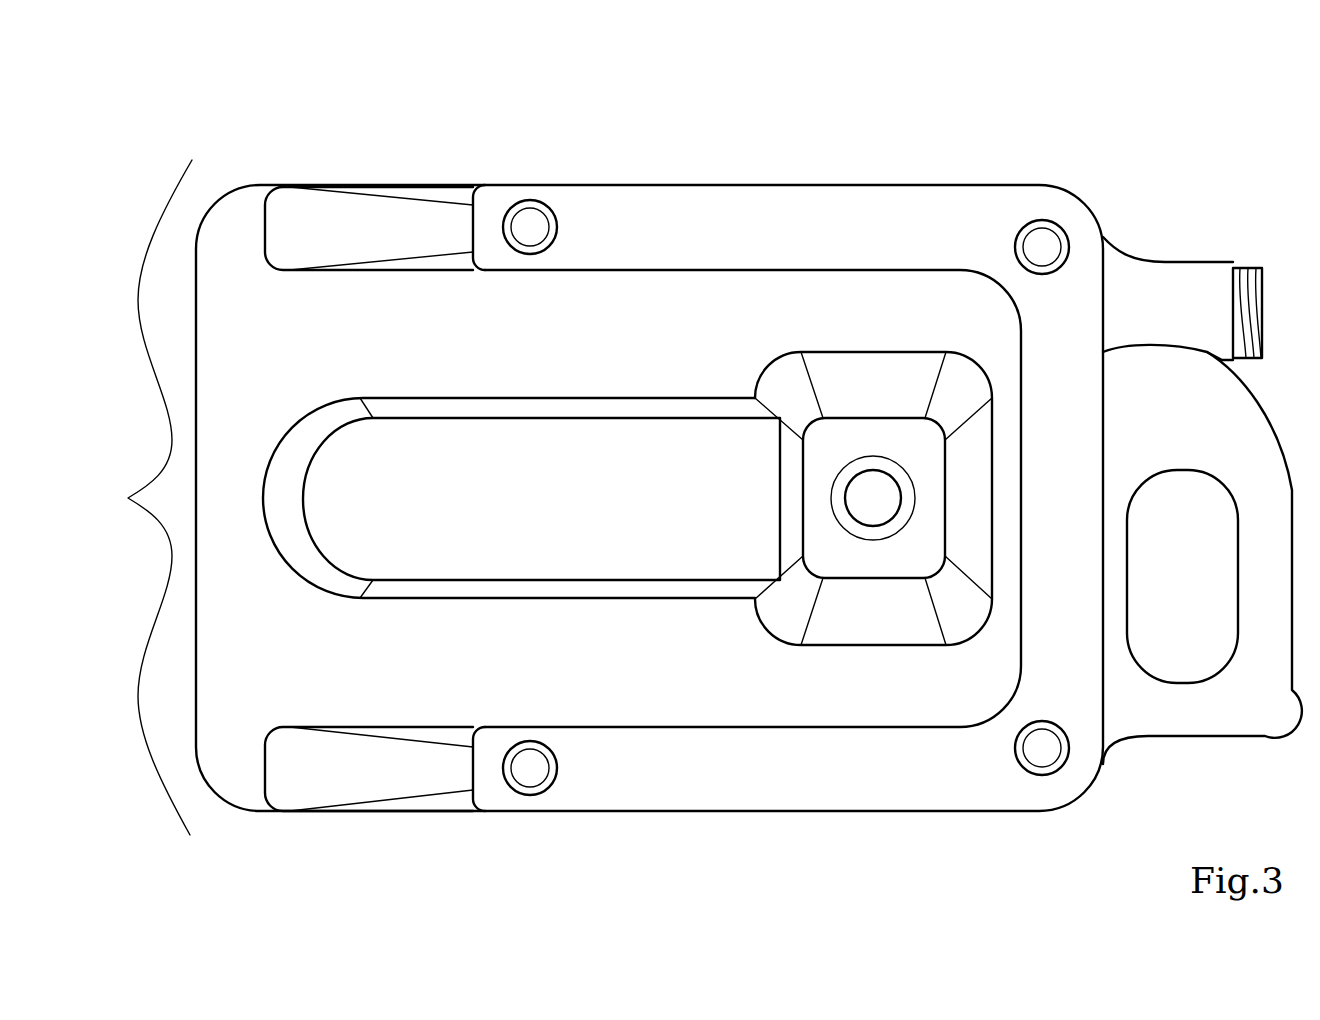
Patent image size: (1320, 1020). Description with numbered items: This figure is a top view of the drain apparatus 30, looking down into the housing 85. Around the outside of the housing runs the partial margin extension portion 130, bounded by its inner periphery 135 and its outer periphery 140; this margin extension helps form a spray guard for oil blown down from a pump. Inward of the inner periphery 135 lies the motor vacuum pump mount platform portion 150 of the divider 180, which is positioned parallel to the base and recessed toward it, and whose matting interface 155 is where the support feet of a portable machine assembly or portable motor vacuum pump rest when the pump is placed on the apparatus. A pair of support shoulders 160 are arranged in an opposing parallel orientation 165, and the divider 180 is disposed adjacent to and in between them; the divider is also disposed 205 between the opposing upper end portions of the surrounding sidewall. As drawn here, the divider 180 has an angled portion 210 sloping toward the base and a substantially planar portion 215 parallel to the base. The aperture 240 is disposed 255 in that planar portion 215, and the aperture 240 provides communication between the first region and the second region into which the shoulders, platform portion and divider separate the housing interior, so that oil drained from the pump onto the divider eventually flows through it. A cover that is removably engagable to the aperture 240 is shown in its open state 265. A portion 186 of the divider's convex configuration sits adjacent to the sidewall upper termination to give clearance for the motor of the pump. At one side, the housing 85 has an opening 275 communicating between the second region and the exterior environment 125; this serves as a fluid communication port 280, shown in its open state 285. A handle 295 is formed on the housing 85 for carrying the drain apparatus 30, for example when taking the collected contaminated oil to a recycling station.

The drain apparatus 30 is at (980, 153).
The housing 85 is at (233, 190).
The exterior environment 125 is at (1112, 145).
The partial margin extension portion 130 is at (701, 254).
The inner periphery of margin extension portion 135 is at (752, 269).
The outer periphery of margin extension portion 140 is at (860, 185).
The motor vacuum pump mount platform portion 150 is at (825, 290).
The matting interface of the motor vacuum pump mount platform portion 155 is at (552, 334).
The support shoulder 160 is at (636, 229).
The opposing parallel orientation of the support shoulders 165 is at (643, 270).
The divider 180 is at (376, 342).
The portion of convex configuration 186 is at (136, 497).
The divider disposed between opposing upper end portions 205 is at (459, 489).
The angled portion of divider 210 is at (541, 534).
The substantially planar portion of divider 215 is at (938, 452).
The aperture 240 is at (882, 513).
The aperture disposed in the planar portion 255 is at (889, 679).
The open state of cover 265 is at (857, 538).
The opening of housing 275 is at (1196, 218).
The fluid communication port 280 is at (1196, 218).
The open state of port 285 is at (1262, 290).
The handle 295 is at (1258, 706).